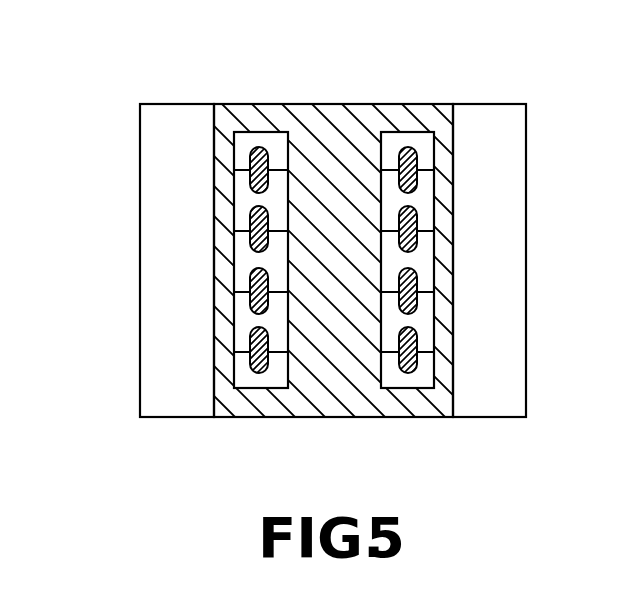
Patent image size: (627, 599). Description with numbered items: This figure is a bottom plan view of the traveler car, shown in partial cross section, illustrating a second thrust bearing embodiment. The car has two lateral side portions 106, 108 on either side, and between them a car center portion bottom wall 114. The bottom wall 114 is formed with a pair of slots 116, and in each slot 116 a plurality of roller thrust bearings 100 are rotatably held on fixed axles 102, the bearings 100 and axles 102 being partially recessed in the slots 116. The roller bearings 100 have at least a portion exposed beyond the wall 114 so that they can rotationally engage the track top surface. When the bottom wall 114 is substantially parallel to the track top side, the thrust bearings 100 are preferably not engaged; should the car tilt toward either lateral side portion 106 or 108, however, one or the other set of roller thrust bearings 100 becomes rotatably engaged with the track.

The roller bearing 100 is at (258, 146).
The fixed axle 102 is at (245, 160).
The lateral side portion 106 is at (140, 297).
The lateral side portion 108 is at (526, 283).
The car center portion bottom wall 114 is at (319, 130).
The slot 116 is at (258, 390).